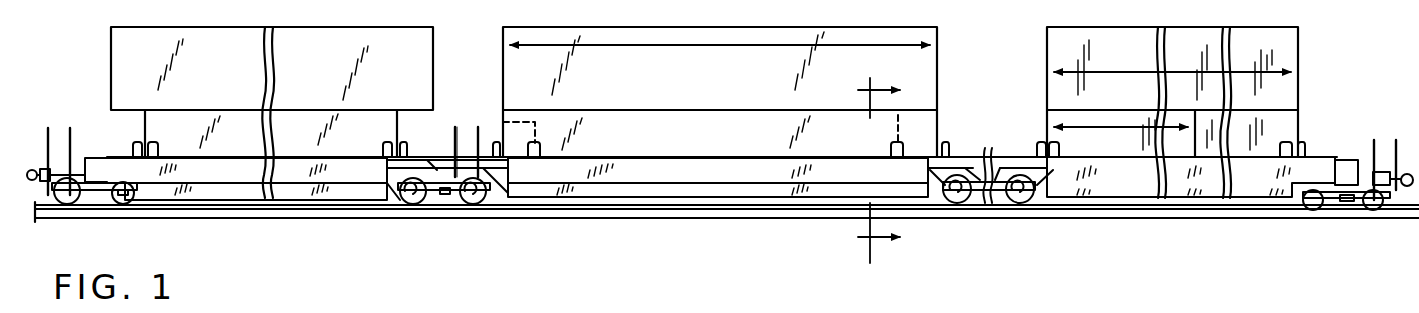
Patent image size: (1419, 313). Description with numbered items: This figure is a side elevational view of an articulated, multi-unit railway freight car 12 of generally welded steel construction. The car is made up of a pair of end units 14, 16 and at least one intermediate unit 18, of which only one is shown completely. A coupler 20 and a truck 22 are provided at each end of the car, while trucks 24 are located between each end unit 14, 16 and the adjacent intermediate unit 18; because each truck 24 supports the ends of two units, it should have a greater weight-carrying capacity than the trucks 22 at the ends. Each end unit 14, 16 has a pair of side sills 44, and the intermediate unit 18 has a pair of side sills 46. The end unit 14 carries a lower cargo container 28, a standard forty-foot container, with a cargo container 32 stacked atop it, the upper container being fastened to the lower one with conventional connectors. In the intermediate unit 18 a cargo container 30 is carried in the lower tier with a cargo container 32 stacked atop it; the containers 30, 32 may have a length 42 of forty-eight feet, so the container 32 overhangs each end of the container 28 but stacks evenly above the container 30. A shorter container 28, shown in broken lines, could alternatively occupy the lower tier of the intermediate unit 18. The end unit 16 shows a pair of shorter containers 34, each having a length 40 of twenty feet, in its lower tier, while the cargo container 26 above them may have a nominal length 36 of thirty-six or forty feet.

The multi-unit articulated railway freight car 12 is at (1333, 107).
The end unit 14 is at (303, 236).
The end unit 16 is at (1143, 236).
The intermediate unit 18 is at (733, 236).
The coupler 20 is at (33, 170).
The truck 22 is at (100, 194).
The truck 24 is at (440, 200).
The cargo container 26 is at (1288, 93).
The cargo container 28 is at (145, 122).
The cargo container 30 is at (932, 128).
The cargo container 32 is at (111, 52).
The cargo container 34 is at (1047, 117).
The nominal length 36 is at (1108, 72).
The length 40 is at (1118, 130).
The length 42 is at (663, 47).
The side sill 44 is at (230, 173).
The side sill 46 is at (650, 173).